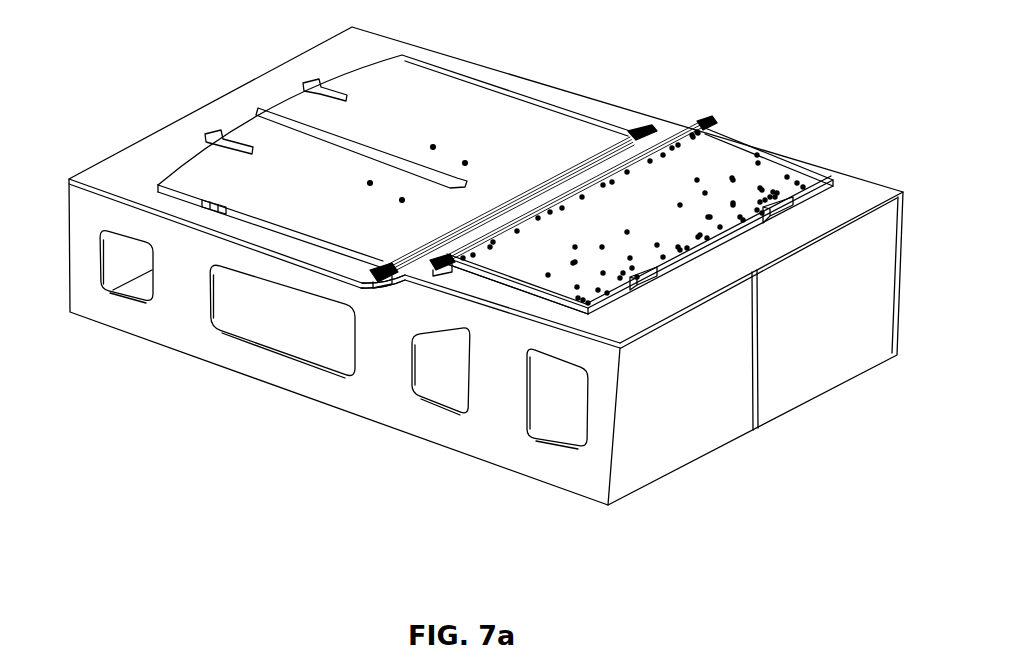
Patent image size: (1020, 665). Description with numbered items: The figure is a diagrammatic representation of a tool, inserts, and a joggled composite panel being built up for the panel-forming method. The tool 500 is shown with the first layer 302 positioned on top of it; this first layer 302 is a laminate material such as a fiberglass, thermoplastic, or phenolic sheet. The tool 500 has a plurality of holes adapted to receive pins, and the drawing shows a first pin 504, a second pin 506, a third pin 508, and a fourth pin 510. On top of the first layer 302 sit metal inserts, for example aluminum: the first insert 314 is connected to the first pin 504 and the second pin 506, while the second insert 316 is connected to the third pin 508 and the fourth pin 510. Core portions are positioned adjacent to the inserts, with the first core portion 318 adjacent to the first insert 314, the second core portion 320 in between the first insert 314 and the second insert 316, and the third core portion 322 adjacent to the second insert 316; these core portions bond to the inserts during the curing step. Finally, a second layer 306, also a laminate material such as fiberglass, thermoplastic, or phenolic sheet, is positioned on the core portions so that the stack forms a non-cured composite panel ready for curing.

The tool 500 is at (327, 62).
The first layer 302 is at (200, 206).
The second layer 306 is at (433, 110).
The first insert 314 is at (634, 127).
The second insert 316 is at (708, 130).
The first core portion 318 is at (268, 230).
The second core portion 320 is at (425, 278).
The third core portion 322 is at (597, 304).
The first pin 504 is at (375, 266).
The second pin 506 is at (658, 126).
The third pin 508 is at (447, 270).
The fourth pin 510 is at (716, 121).